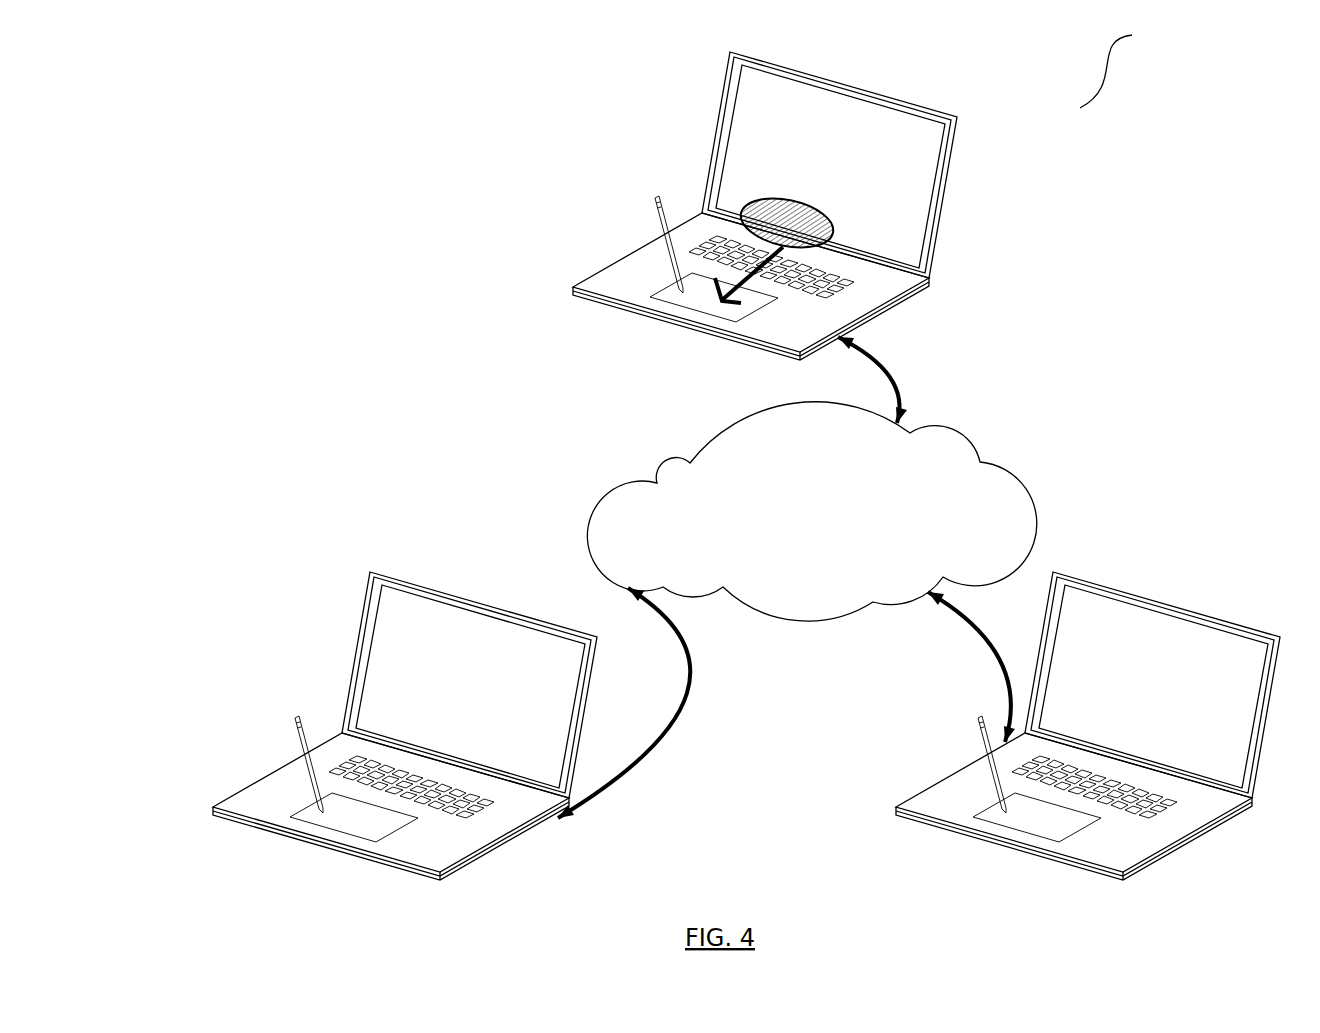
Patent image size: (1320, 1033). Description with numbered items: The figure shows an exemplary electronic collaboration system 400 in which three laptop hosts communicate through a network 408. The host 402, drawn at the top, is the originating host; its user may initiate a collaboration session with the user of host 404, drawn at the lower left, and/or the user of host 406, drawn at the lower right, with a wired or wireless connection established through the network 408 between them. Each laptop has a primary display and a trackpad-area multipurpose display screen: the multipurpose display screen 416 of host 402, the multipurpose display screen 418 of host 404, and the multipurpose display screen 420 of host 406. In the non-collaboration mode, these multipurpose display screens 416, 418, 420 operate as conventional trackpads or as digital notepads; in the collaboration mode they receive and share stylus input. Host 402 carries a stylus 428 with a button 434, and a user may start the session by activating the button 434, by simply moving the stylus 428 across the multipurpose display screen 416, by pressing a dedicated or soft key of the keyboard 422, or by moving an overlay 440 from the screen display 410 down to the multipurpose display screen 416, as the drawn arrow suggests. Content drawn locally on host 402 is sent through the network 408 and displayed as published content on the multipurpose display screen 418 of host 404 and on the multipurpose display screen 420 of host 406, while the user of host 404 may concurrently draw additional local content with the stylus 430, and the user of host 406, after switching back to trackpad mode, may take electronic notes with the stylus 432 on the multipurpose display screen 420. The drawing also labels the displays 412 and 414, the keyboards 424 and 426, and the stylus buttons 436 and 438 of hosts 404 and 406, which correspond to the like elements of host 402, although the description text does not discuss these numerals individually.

The electronic collaboration system 400 is at (1125, 67).
The host 402 is at (755, 206).
The host 404 is at (384, 718).
The host 406 is at (1087, 726).
The network 408 is at (811, 511).
The screen display 410 is at (829, 165).
The display of second computing device 412 is at (469, 685).
The display of third computing device 414 is at (1152, 685).
The multipurpose display screen 416 is at (660, 308).
The multipurpose display screen 418 is at (313, 823).
The multipurpose display screen 420 is at (993, 822).
The keyboard 422 is at (707, 248).
The keyboard of second computing device 424 is at (347, 770).
The keyboard of third computing device 426 is at (1167, 798).
The stylus 428 is at (678, 291).
The stylus 430 is at (317, 788).
The stylus 432 is at (1005, 812).
The button 434 is at (670, 243).
The stylus of second computing device 436 is at (310, 753).
The stylus of third computing device 438 is at (997, 773).
The overlay 440 is at (777, 197).